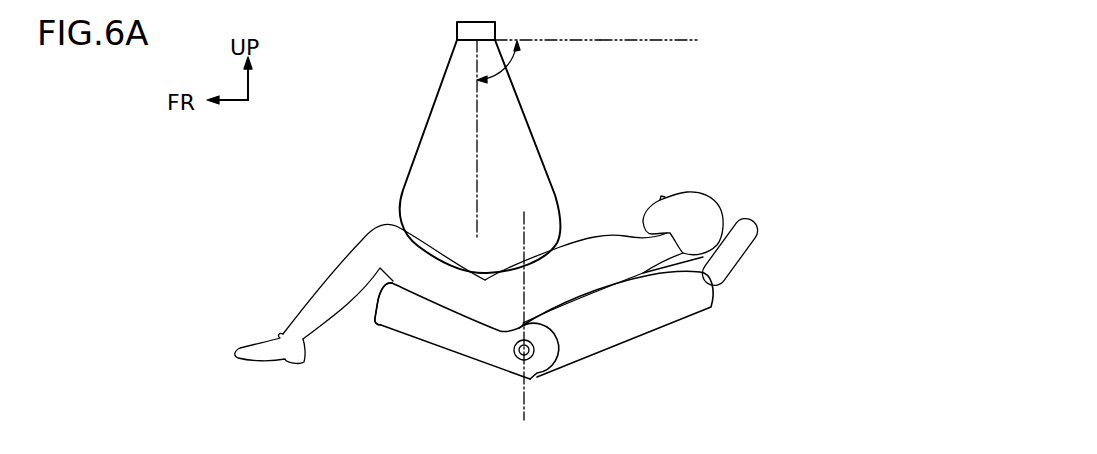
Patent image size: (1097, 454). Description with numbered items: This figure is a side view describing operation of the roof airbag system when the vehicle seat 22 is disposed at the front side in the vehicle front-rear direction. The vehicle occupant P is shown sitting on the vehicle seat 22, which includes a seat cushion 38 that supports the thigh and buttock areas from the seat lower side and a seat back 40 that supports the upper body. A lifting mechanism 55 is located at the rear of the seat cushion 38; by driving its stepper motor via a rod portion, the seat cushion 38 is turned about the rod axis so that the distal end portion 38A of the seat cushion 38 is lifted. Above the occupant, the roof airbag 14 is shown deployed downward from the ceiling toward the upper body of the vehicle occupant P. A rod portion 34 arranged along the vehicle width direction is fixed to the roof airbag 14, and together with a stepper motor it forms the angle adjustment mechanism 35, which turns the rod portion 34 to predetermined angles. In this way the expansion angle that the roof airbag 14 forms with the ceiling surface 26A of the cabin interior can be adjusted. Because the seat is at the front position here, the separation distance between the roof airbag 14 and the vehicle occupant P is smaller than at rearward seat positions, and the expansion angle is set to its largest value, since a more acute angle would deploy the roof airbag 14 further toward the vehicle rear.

The roof airbag 14 is at (527, 140).
The vehicle seat 22 is at (695, 330).
The ceiling surface 26A is at (655, 42).
The rod portion 34 is at (476, 31).
The angle adjustment mechanism 35 is at (505, 25).
The seat cushion 38 is at (435, 340).
The distal end portion 38A is at (385, 313).
The seat back 40 is at (637, 330).
The lifting mechanism 55 is at (551, 371).
The vehicle occupant P is at (608, 229).